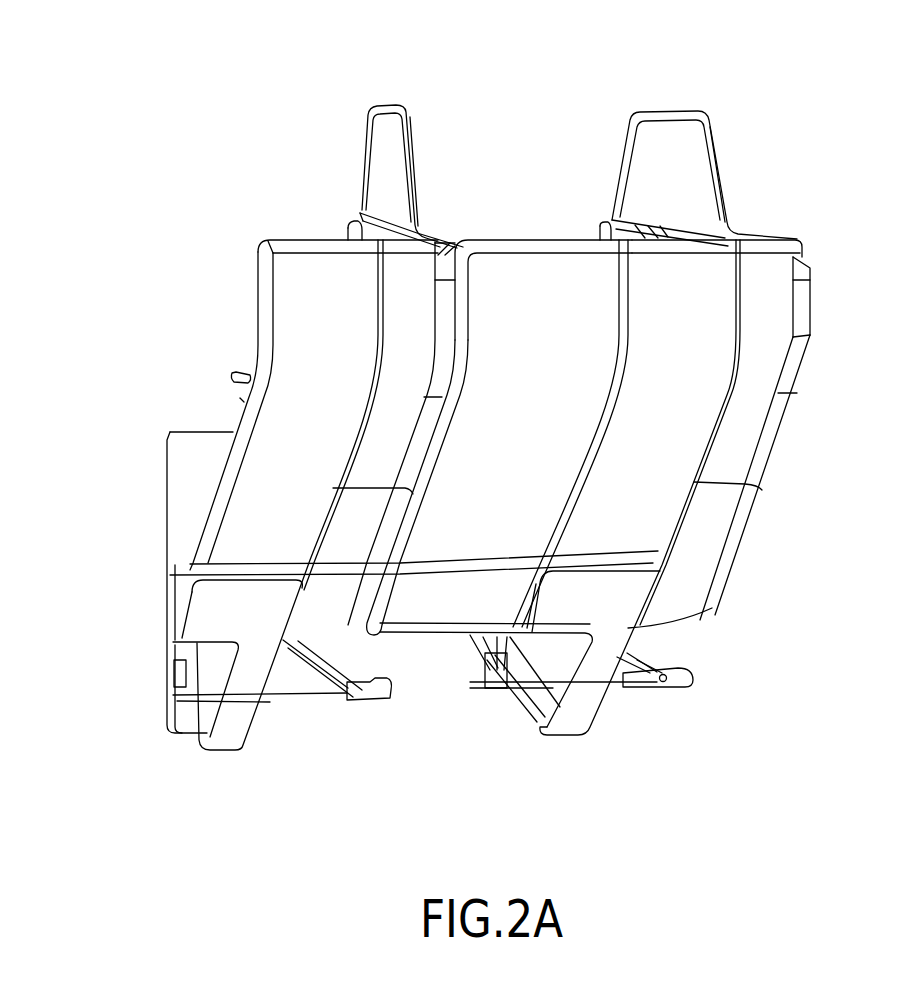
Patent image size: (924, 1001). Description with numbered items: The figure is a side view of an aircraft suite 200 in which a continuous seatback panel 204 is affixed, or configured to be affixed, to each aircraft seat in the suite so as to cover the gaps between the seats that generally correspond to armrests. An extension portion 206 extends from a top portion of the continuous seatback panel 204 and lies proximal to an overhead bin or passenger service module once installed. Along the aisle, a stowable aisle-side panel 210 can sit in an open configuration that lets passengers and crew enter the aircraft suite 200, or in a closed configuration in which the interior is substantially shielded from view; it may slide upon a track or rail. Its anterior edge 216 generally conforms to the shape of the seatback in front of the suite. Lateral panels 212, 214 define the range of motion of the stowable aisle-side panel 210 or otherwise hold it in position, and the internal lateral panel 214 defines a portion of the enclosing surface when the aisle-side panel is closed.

The aircraft suite 200 is at (515, 88).
The continuous seatback panel 204 is at (830, 492).
The extension portion 206 is at (690, 155).
The stowable aisle-side panel 210 is at (592, 280).
The lateral panel 212 is at (613, 618).
The internal lateral panel 214 is at (707, 278).
The anterior edge 216 is at (413, 213).